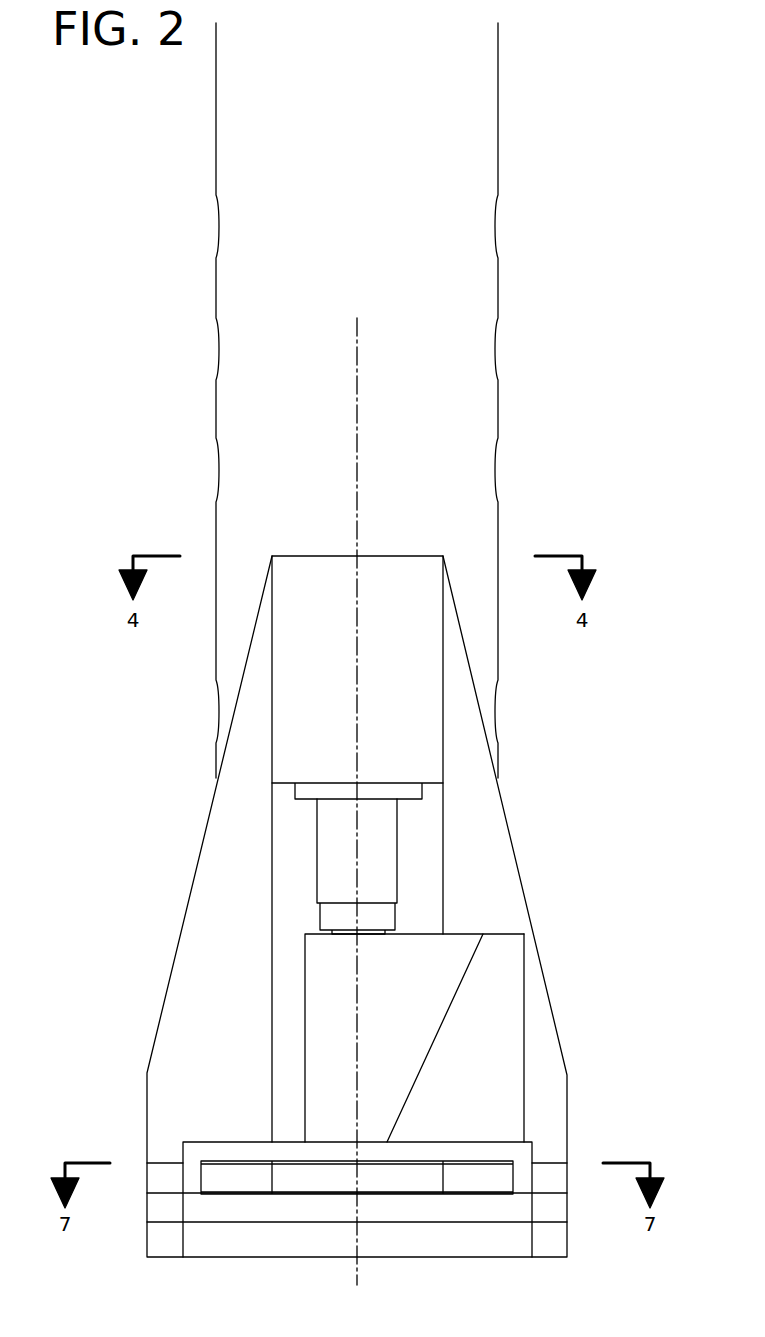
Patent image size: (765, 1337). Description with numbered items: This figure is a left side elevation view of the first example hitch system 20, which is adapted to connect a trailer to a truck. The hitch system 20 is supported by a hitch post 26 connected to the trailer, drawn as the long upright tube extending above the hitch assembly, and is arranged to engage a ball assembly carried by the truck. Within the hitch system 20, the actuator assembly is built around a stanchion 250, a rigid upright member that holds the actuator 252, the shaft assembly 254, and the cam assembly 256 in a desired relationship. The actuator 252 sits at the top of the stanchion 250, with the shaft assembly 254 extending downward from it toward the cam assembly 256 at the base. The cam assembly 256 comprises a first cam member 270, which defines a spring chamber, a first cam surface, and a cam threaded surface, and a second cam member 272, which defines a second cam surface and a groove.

The hitch system 20 is at (567, 822).
The hitch post 26 is at (482, 153).
The stanchion 250 is at (495, 873).
The actuator 252 is at (422, 683).
The shaft assembly 254 is at (404, 844).
The cam assembly 256 is at (527, 954).
The first cam member 270 is at (422, 1000).
The second cam member 272 is at (503, 1040).